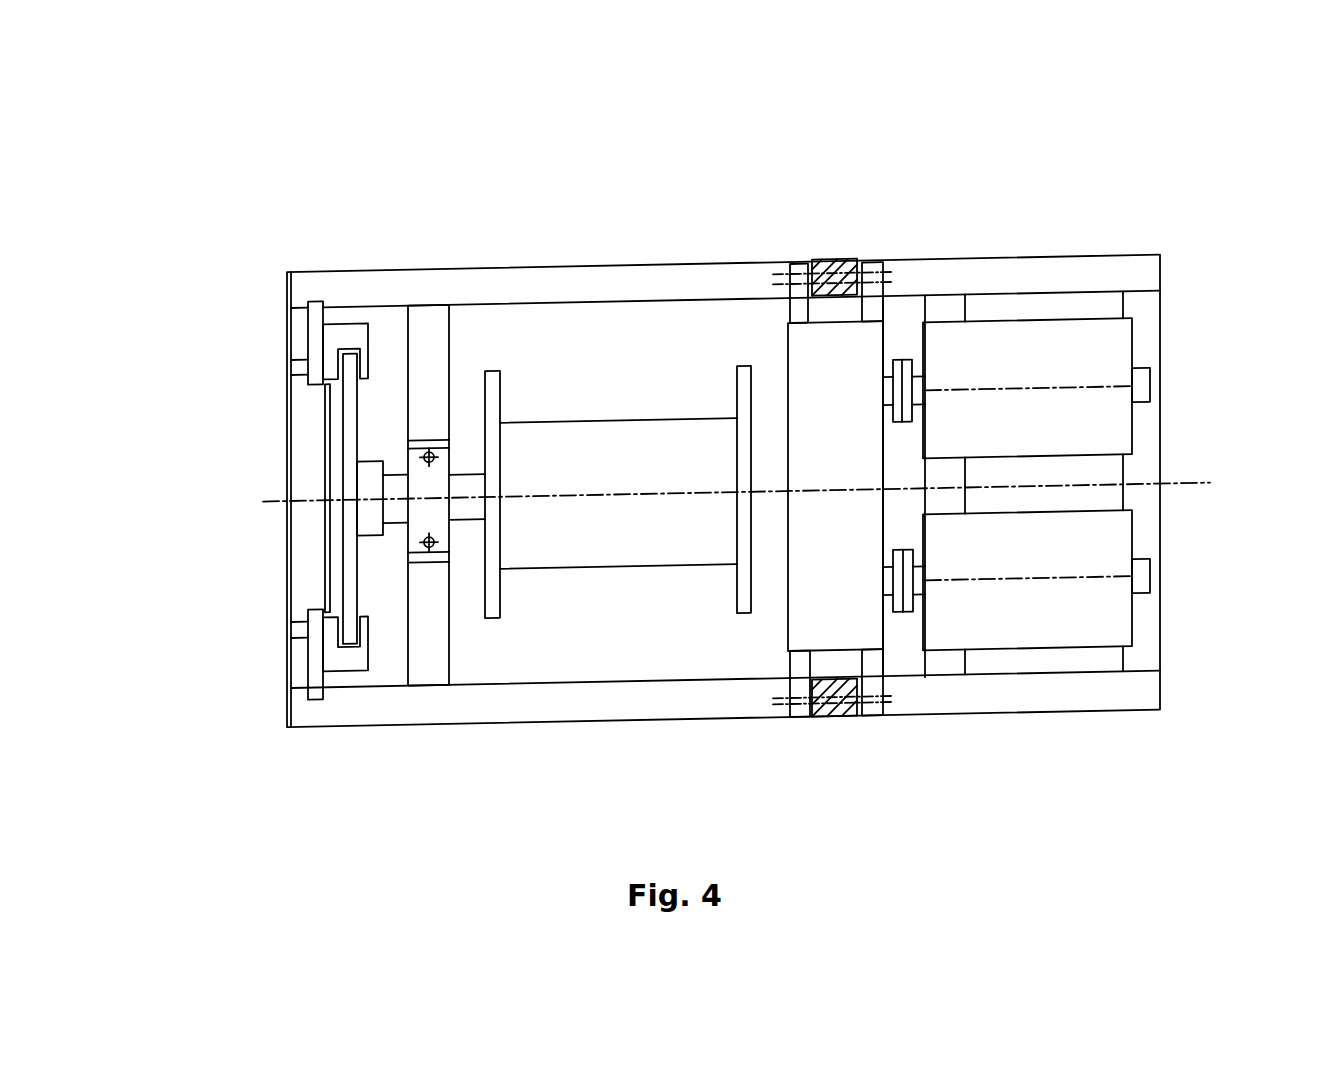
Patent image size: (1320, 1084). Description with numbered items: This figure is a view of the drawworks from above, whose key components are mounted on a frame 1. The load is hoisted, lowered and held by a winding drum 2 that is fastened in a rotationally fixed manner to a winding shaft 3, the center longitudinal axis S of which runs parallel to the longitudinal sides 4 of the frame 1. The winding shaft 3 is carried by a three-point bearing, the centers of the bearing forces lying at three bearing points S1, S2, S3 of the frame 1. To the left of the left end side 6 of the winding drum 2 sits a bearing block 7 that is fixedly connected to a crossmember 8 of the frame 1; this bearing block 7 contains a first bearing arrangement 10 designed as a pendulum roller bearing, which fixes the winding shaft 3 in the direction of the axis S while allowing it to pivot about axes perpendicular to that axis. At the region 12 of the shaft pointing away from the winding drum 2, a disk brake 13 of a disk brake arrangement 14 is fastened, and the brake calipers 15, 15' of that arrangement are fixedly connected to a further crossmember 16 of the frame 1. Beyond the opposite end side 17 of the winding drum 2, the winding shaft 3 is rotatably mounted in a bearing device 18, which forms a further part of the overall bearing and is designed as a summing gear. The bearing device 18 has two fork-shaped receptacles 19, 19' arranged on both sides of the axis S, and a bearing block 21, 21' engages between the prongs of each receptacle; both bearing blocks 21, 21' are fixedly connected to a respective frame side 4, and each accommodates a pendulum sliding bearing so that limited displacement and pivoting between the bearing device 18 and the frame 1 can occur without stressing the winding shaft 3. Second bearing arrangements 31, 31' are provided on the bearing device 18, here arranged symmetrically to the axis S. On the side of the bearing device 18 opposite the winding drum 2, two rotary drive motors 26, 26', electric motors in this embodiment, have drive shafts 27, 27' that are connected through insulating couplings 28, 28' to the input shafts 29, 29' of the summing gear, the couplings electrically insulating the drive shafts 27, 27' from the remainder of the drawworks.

The frame 1 is at (233, 437).
The winding drum 2 is at (625, 459).
The winding shaft 3 is at (470, 514).
The longitudinal sides 4 is at (670, 291).
The left end side 6 is at (480, 414).
The bearing block 7 is at (403, 549).
The crossmember 8 is at (438, 641).
The first bearing arrangement 10 is at (372, 450).
The region 12 is at (395, 514).
The disk brake 13 is at (355, 404).
The disk brake arrangement 14 is at (262, 329).
The brake caliper 15 is at (334, 273).
The brake caliper 15' is at (338, 702).
The further crossmember 16 is at (302, 598).
The end side 17 is at (766, 405).
The bearing device 18 is at (856, 467).
The fork-shaped receptacle 19 is at (852, 222).
The fork-shaped receptacle 19' is at (834, 747).
The bearing block 21 is at (930, 428).
The bearing block 21' is at (816, 737).
The rotary drive motor 26 is at (1027, 402).
The rotary drive motor 26' is at (1027, 592).
The drive shaft 27 is at (1195, 368).
The drive shaft 27' is at (1194, 582).
The insulating coupling 28 is at (992, 308).
The insulating coupling 28' is at (961, 661).
The input shaft 29 is at (985, 264).
The input shaft 29' is at (930, 686).
The second bearing arrangement 31 is at (855, 208).
The second bearing arrangement 31' is at (788, 719).
The center longitudinal axis S is at (263, 507).
The bearing point S1 is at (420, 443).
The bearing point S2 is at (847, 738).
The bearing point S3 is at (860, 248).